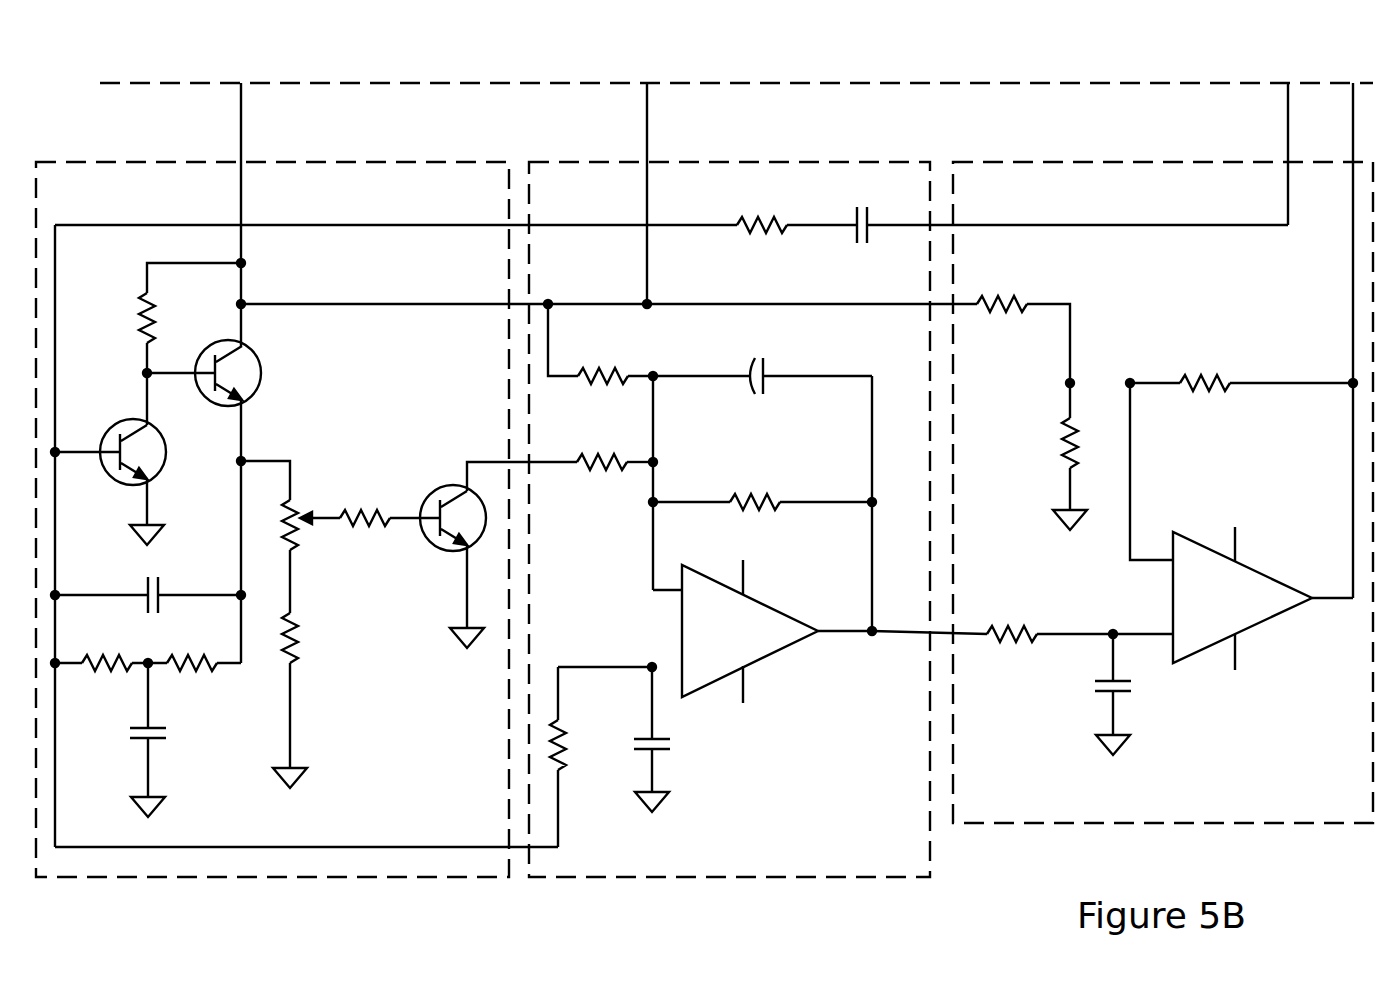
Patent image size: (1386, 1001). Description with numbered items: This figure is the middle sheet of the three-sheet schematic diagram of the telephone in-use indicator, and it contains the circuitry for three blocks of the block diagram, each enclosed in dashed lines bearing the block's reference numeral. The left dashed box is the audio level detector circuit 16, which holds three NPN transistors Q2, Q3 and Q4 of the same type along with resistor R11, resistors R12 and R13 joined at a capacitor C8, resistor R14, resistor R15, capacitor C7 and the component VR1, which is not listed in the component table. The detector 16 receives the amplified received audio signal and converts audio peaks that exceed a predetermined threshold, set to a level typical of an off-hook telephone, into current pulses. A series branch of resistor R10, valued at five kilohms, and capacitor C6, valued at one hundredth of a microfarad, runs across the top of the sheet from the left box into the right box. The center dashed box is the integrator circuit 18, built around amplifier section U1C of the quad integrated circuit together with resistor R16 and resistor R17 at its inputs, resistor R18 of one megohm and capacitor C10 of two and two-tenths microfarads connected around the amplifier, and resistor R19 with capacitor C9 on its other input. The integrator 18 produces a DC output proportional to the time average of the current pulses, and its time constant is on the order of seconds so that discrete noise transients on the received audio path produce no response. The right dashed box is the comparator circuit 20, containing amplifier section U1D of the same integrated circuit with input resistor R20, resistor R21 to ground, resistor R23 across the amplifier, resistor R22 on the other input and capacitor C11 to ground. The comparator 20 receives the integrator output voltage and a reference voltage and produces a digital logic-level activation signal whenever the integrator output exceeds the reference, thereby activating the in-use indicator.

The audio level detector circuit 16 is at (393, 162).
The integrator circuit 18 is at (835, 162).
The comparator circuit 20 is at (1122, 162).
The resistor R10 is at (765, 222).
The capacitor C6 is at (869, 210).
The resistor R11 is at (138, 318).
The NPN transistor Q2 is at (118, 432).
The NPN transistor Q3 is at (258, 362).
The NPN transistor Q4 is at (430, 492).
The variable resistor VR1 is at (297, 510).
The resistor R15 is at (366, 527).
The resistor R14 is at (298, 643).
The capacitor C7 is at (162, 583).
The resistor R12 is at (100, 672).
The resistor R13 is at (212, 672).
The capacitor C8 is at (172, 735).
The resistor R17 is at (587, 372).
The capacitor C10 is at (767, 368).
The resistor R16 is at (592, 474).
The resistor R18 is at (758, 495).
The ICL7642 integrated circuit section U1C is at (775, 607).
The resistor R19 is at (570, 722).
The capacitor C9 is at (672, 745).
The resistor R20 is at (1003, 297).
The resistor R23 is at (1210, 377).
The resistor R21 is at (1063, 440).
The ICL7642 integrated circuit section U1D is at (1262, 572).
The resistor R22 is at (1003, 627).
The capacitor C11 is at (1093, 684).